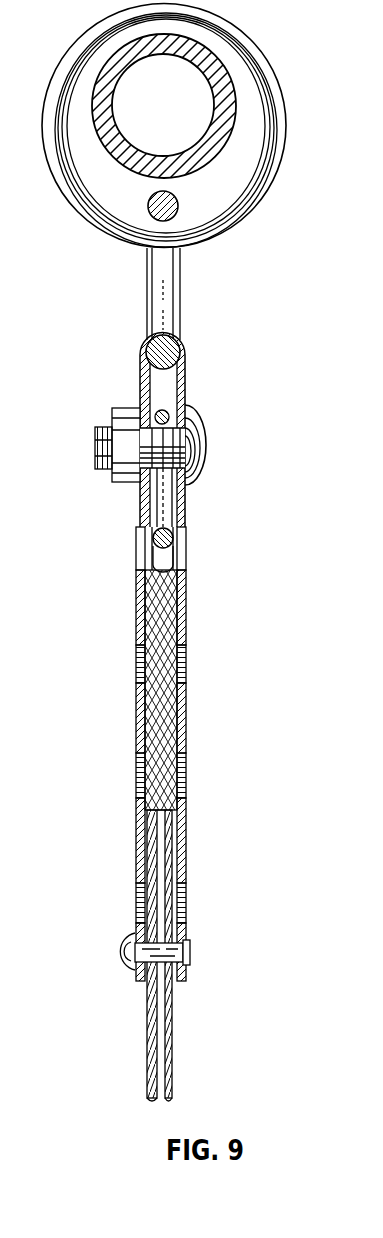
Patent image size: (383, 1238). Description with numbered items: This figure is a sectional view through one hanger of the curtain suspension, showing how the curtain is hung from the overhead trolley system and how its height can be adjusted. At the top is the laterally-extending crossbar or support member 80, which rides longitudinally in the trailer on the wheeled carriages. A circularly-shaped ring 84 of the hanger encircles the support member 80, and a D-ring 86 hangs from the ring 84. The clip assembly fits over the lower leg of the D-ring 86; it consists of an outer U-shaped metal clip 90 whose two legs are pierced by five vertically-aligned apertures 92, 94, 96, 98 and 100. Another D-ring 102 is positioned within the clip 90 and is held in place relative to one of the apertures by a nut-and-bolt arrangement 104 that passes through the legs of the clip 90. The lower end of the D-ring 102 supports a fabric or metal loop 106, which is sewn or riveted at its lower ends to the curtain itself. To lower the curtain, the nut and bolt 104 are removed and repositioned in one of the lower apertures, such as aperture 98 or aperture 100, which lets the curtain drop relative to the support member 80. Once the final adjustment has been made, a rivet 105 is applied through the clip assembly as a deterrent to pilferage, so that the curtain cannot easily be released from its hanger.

The support member 80 is at (218, 70).
The ring 84 is at (237, 222).
The D-ring 86 is at (153, 207).
The clip 90 is at (185, 364).
The aperture 92 is at (184, 439).
The aperture 94 is at (204, 527).
The aperture 96 is at (182, 652).
The aperture 98 is at (181, 772).
The aperture 100 is at (182, 897).
The D-ring 102 is at (178, 381).
The nut-and-bolt arrangement 104 is at (186, 482).
The rivet 105 is at (194, 963).
The loop 106 is at (205, 558).